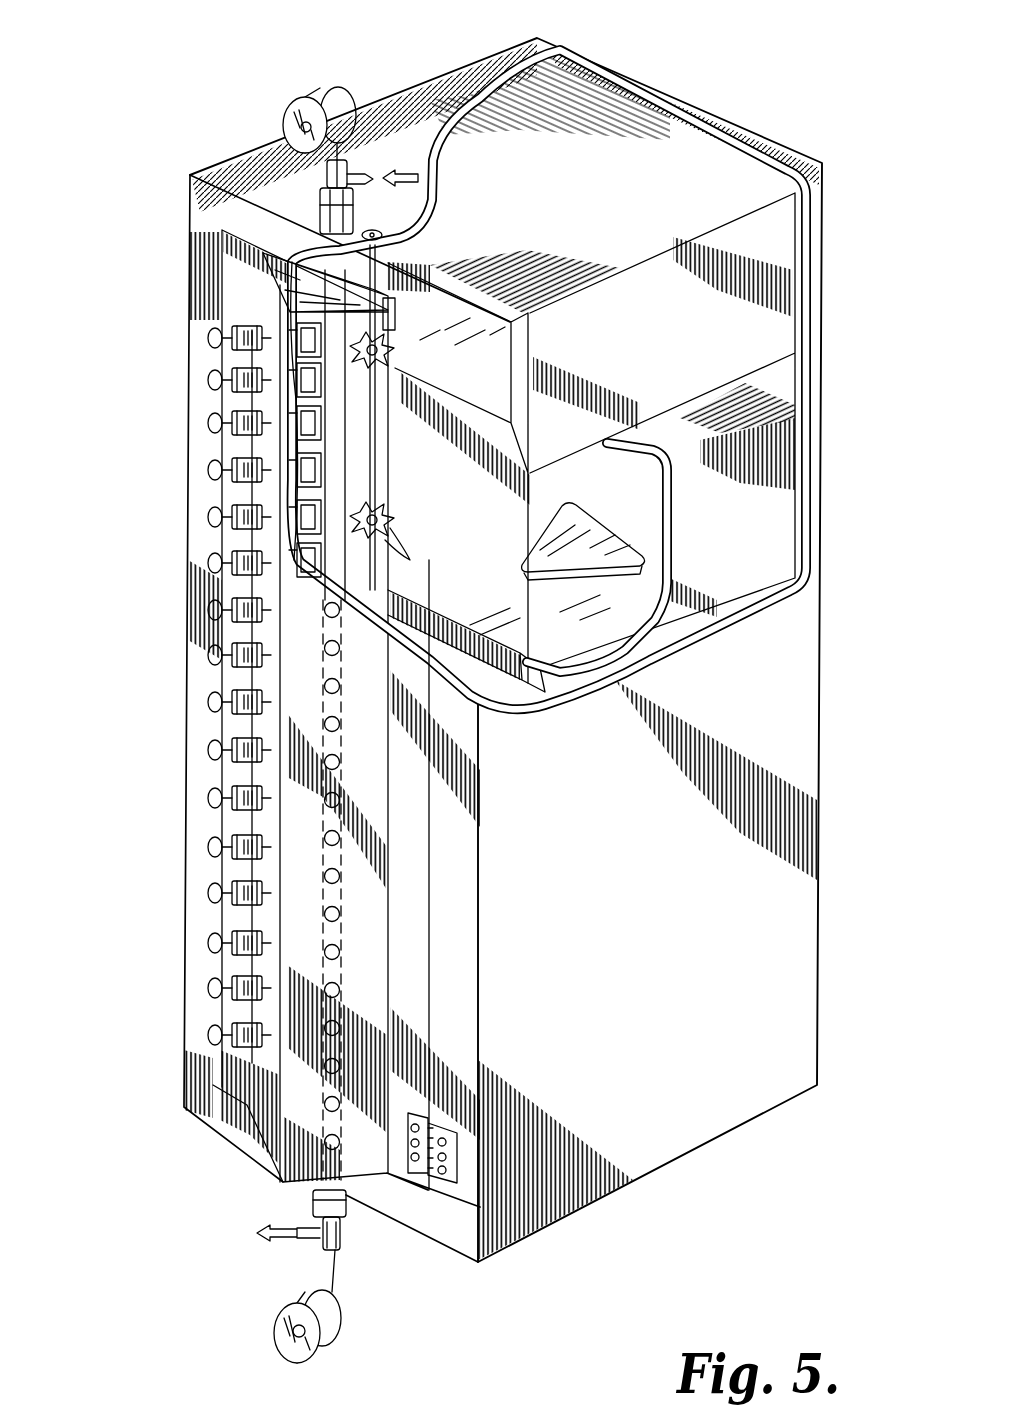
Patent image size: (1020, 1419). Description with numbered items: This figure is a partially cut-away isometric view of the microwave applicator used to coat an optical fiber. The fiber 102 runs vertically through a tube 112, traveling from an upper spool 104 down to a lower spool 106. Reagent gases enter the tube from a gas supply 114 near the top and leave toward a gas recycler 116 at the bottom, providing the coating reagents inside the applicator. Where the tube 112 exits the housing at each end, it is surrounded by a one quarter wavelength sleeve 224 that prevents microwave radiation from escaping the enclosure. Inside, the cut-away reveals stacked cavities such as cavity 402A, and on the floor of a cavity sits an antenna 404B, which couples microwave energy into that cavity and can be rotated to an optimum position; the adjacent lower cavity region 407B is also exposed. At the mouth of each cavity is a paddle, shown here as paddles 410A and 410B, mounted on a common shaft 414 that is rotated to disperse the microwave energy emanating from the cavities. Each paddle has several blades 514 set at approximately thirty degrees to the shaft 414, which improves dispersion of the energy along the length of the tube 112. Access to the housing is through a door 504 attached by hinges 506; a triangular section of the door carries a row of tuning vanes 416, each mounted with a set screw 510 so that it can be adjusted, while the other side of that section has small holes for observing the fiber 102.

The fiber 102 is at (348, 150).
The spool 104 is at (342, 92).
The spool 106 is at (325, 1333).
The tube 112 is at (350, 170).
The gas supply 114 is at (422, 178).
The gas recycler 116 is at (248, 1230).
The one quarter wavelength sleeve 224 is at (354, 211).
The cavity 402A is at (503, 382).
The antenna 404B is at (572, 566).
The lower chamber shelf 407B is at (533, 617).
The paddle 410A is at (376, 342).
The paddle 410B is at (396, 518).
The shaft 414 is at (376, 455).
The tuning vanes 416 is at (297, 423).
The door 504 is at (418, 968).
The hinges 506 is at (420, 1113).
The set screws 510 is at (207, 1035).
The blades 514 is at (549, 379).